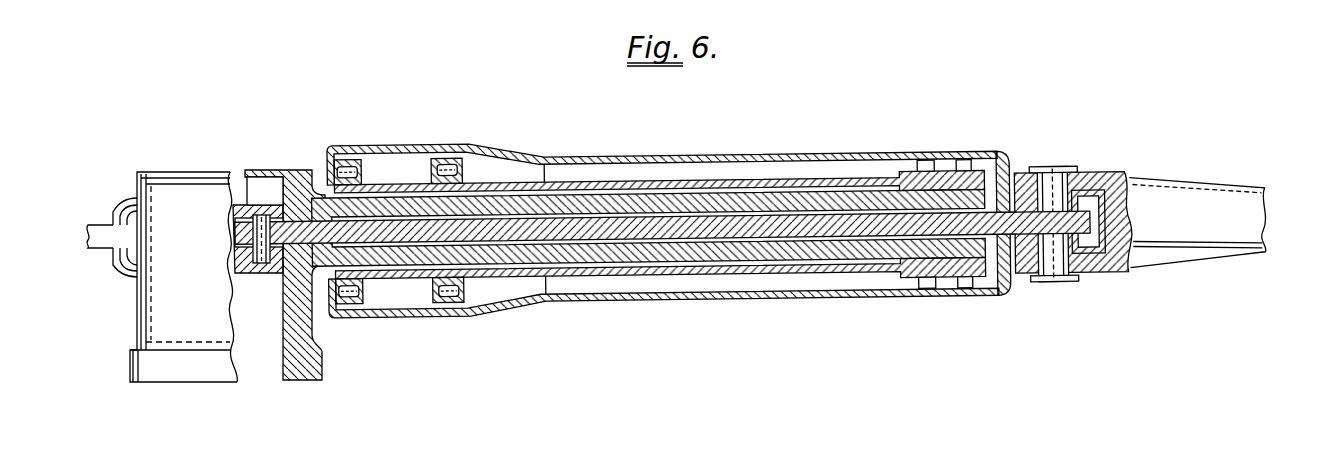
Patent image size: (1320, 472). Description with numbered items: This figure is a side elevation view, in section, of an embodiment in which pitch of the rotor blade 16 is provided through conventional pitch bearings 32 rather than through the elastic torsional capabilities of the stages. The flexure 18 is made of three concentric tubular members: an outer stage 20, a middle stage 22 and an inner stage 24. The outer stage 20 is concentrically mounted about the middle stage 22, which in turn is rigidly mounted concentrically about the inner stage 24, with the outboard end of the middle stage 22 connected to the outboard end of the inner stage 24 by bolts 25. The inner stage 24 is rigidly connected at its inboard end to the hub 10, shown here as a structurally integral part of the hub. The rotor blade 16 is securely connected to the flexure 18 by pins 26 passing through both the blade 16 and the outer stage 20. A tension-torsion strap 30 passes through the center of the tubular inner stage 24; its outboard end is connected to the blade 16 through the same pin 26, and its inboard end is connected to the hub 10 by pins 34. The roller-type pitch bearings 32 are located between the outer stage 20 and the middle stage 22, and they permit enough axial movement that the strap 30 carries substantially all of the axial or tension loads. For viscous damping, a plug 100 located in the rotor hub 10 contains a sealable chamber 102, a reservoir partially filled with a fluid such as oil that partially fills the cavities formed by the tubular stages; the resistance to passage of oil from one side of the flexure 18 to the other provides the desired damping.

The hub 10 is at (157, 306).
The rotor blade 16 is at (1198, 200).
The flexure 18 is at (750, 243).
The outer stage 20 is at (605, 158).
The middle stage 22 is at (673, 184).
The inner stage 24 is at (752, 200).
The bolts 25 is at (961, 168).
The pins 26 is at (1053, 186).
The tension-torsion strap 30 is at (818, 223).
The pitch bearings 32 is at (352, 165).
The pins 34 is at (263, 260).
The plug 100 is at (287, 174).
The chamber 102 is at (252, 197).